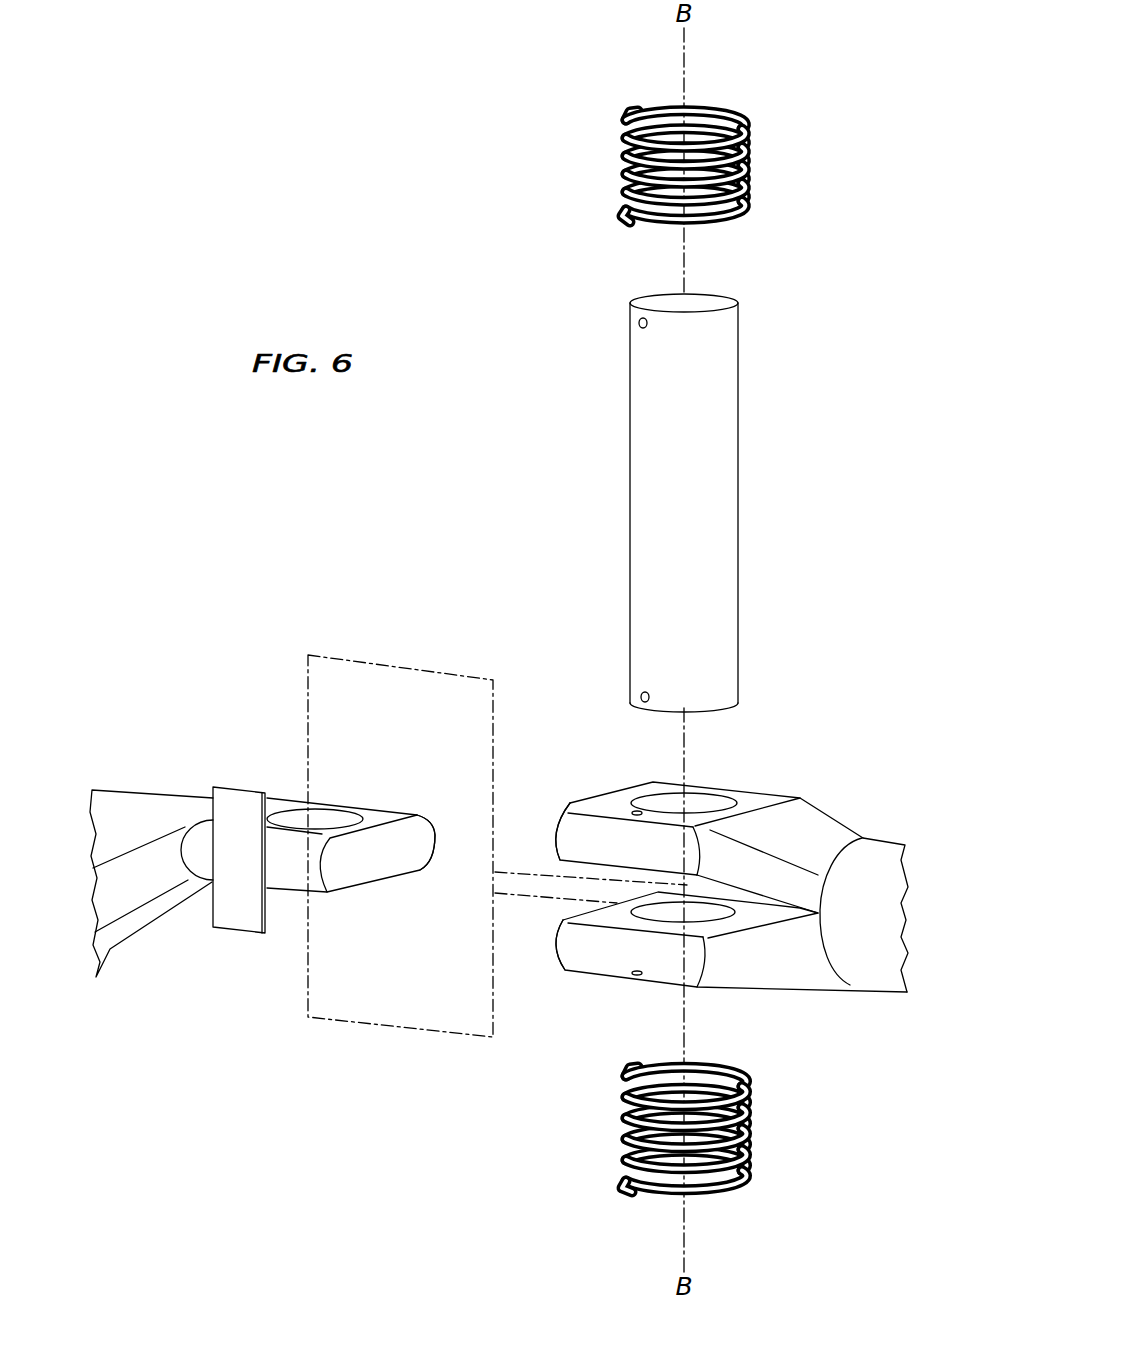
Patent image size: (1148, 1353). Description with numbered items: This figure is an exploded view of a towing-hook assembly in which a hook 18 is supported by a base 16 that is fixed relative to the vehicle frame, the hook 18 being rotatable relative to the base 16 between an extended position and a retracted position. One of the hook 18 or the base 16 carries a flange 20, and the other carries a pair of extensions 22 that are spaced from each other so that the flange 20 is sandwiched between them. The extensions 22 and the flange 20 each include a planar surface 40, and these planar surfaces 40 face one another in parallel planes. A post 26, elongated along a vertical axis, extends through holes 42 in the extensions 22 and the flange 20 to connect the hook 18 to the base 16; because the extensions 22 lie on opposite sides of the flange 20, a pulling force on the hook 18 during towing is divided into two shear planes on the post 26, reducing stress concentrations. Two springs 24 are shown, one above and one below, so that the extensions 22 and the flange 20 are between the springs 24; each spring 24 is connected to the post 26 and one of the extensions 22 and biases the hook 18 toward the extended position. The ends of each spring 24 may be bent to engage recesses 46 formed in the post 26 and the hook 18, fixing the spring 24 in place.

The base 16 is at (93, 928).
The hook 18 is at (914, 885).
The flange 20 is at (360, 865).
The extensions 22 is at (600, 807).
The spring 24 is at (748, 168).
The post 26 is at (738, 420).
The planar surface 40 is at (585, 862).
The holes 42 is at (717, 910).
The recesses 46 is at (639, 321).